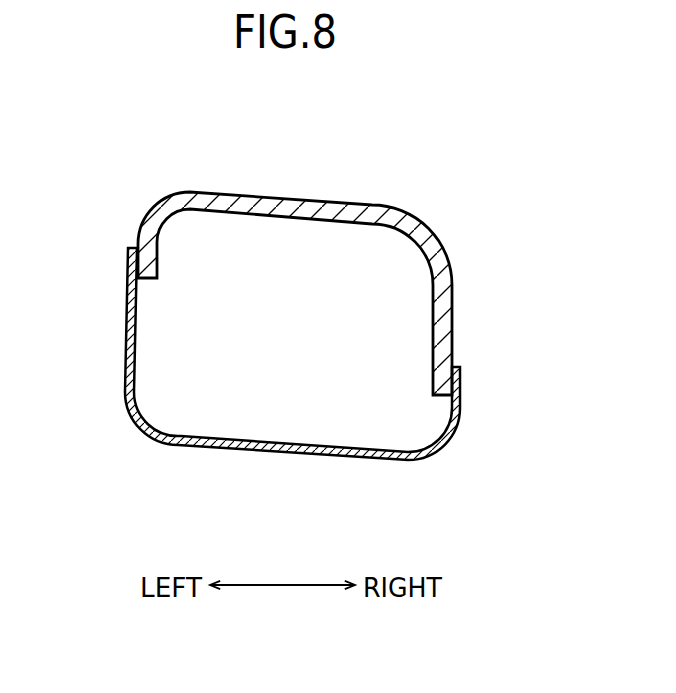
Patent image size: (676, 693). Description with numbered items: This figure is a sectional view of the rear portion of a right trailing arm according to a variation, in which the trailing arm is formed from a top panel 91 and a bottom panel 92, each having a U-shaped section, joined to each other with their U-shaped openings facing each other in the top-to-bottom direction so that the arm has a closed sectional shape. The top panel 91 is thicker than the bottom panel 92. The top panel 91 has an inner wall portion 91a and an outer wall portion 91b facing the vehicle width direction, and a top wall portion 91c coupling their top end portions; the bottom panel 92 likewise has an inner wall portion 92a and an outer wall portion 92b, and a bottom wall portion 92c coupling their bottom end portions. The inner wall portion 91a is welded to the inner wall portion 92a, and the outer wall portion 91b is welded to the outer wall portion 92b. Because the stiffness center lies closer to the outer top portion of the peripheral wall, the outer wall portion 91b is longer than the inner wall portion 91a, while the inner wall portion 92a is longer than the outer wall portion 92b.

The top panel 91 is at (388, 192).
The inner wall portion 91a is at (138, 243).
The outer wall portion 91b is at (452, 312).
The top wall portion 91c is at (298, 190).
The bottom panel 92 is at (228, 455).
The inner wall portion 92a is at (124, 305).
The outer wall portion 92b is at (462, 388).
The bottom wall portion 92c is at (295, 456).